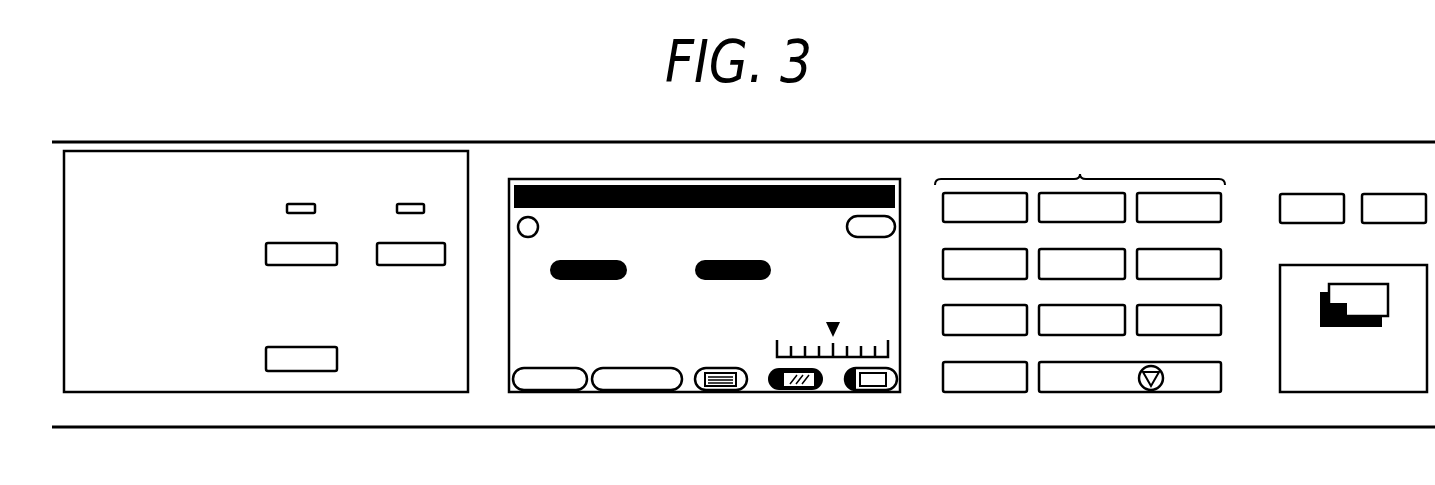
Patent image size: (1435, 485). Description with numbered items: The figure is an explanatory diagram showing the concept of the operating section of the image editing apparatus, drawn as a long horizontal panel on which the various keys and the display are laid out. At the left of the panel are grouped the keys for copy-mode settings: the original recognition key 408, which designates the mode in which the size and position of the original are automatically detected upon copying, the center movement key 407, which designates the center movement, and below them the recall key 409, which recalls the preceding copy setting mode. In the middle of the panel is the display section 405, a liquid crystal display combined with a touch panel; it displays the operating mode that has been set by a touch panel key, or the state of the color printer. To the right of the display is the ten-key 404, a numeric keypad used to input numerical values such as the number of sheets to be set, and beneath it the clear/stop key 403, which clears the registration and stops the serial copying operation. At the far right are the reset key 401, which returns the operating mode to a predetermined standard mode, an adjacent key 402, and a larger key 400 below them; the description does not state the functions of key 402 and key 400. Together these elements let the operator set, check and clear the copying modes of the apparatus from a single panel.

The copy start key 400 is at (1383, 392).
The reset key 401 is at (1413, 193).
The asterisk key 402 is at (1327, 193).
The clear/stop key 403 is at (1097, 392).
The ten-key 404 is at (1080, 268).
The display section 405 is at (746, 392).
The center movement key 407 is at (418, 265).
The original recognition key 408 is at (313, 265).
The recall key 409 is at (318, 371).